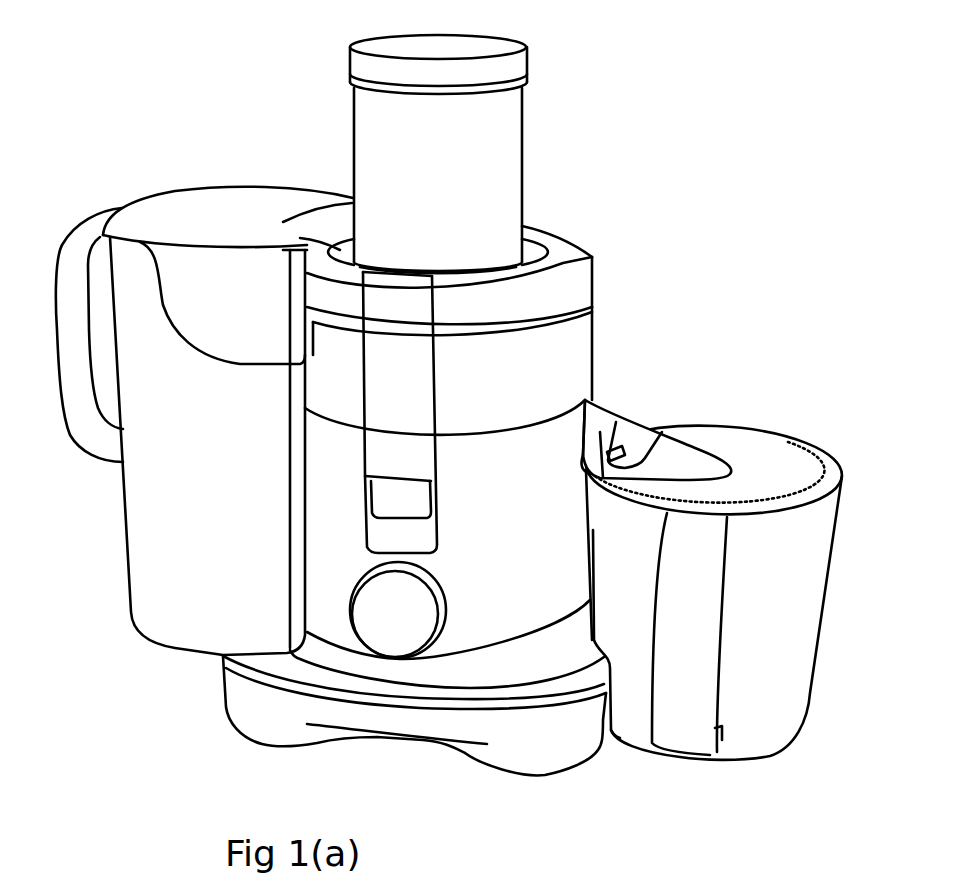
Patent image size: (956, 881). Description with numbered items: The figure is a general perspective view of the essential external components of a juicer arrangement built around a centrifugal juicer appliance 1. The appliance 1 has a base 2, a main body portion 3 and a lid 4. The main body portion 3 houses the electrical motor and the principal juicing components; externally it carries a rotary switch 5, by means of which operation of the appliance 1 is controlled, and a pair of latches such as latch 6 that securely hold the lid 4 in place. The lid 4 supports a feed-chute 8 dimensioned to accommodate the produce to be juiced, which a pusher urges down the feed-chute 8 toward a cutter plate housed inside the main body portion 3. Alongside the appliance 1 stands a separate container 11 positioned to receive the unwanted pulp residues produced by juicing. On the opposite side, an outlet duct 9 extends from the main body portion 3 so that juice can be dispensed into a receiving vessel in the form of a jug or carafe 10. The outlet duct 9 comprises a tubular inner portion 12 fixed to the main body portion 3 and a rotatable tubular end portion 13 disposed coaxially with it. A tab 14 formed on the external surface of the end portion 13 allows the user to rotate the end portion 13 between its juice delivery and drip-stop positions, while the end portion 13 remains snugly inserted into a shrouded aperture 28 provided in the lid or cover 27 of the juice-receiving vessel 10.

The centrifugal juicer appliance 1 is at (130, 716).
The base 2 is at (547, 742).
The main body portion 3 is at (488, 587).
The lid 4 is at (593, 278).
The rotary switch 5 is at (367, 633).
The latch 6 is at (397, 382).
The feed-chute 8 is at (507, 167).
The outlet duct 9 is at (620, 408).
The jug or carafe 10 is at (757, 410).
The container 11 is at (157, 503).
The tubular inner portion 12 is at (586, 400).
The rotatable tubular end portion 13 is at (637, 443).
The tab 14 is at (618, 444).
The lid or cover 27 is at (771, 461).
The shrouded aperture 28 is at (682, 453).